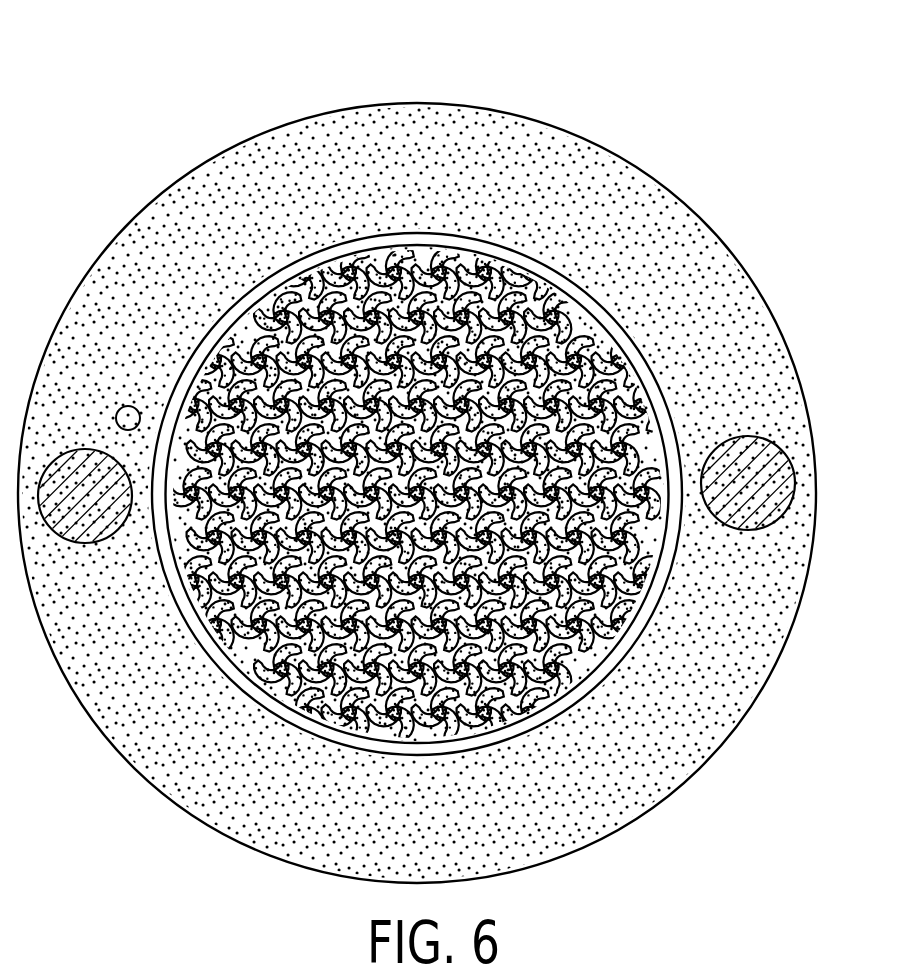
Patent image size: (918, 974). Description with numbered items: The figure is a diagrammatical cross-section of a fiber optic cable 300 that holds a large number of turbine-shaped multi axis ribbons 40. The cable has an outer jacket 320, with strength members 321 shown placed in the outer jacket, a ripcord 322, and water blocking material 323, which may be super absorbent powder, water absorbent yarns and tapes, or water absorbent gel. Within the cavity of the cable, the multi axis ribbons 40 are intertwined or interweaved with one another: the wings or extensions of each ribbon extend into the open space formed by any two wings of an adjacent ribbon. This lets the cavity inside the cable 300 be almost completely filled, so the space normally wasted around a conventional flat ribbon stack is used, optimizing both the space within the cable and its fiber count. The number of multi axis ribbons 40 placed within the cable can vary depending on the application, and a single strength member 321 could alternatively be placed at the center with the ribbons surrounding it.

The fiber optic cable 300 is at (444, 443).
The outer jacket 320 is at (372, 103).
The strength member 321 is at (800, 475).
The ripcord 322 is at (128, 406).
The water blocking material 323 is at (602, 643).
The multi axis ribbon 40 is at (623, 372).